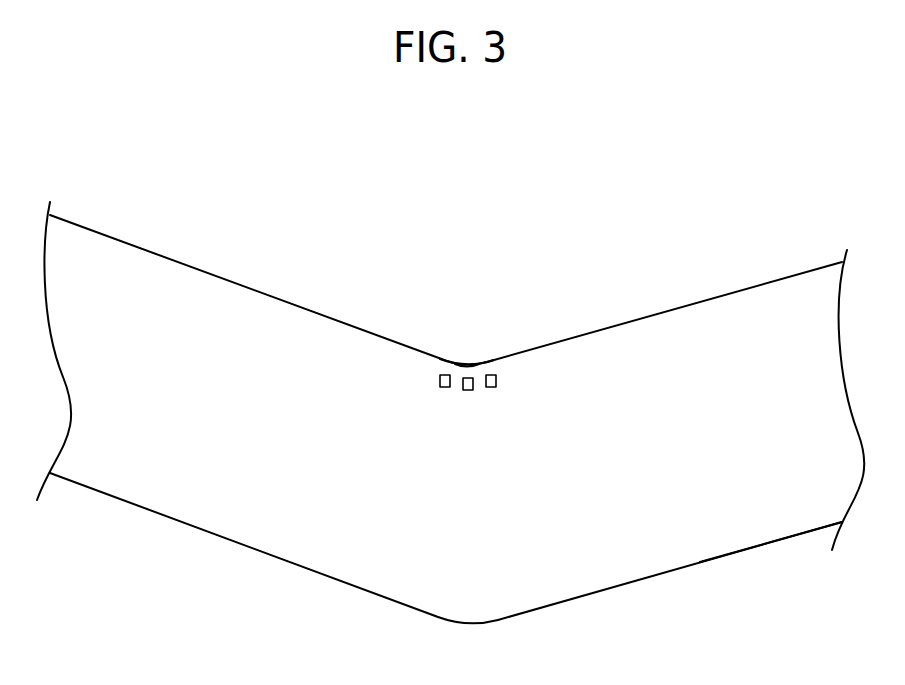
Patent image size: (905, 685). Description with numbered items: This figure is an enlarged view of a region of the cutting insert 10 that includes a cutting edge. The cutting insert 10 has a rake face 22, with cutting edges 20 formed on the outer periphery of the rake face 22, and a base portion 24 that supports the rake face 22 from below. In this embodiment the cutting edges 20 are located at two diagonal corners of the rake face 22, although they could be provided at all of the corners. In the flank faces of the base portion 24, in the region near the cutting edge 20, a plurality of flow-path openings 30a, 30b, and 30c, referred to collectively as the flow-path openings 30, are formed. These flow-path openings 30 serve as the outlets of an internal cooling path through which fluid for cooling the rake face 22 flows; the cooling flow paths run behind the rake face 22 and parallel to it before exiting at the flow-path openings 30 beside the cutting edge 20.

The cutting insert 10 is at (762, 199).
The cutting edge 20 is at (470, 365).
The rake face 22 is at (458, 362).
The base portion 24 is at (740, 533).
The flow-path openings 30 is at (532, 452).
The flow-path opening 30a is at (444, 388).
The flow-path opening 30b is at (468, 391).
The flow-path opening 30c is at (493, 388).